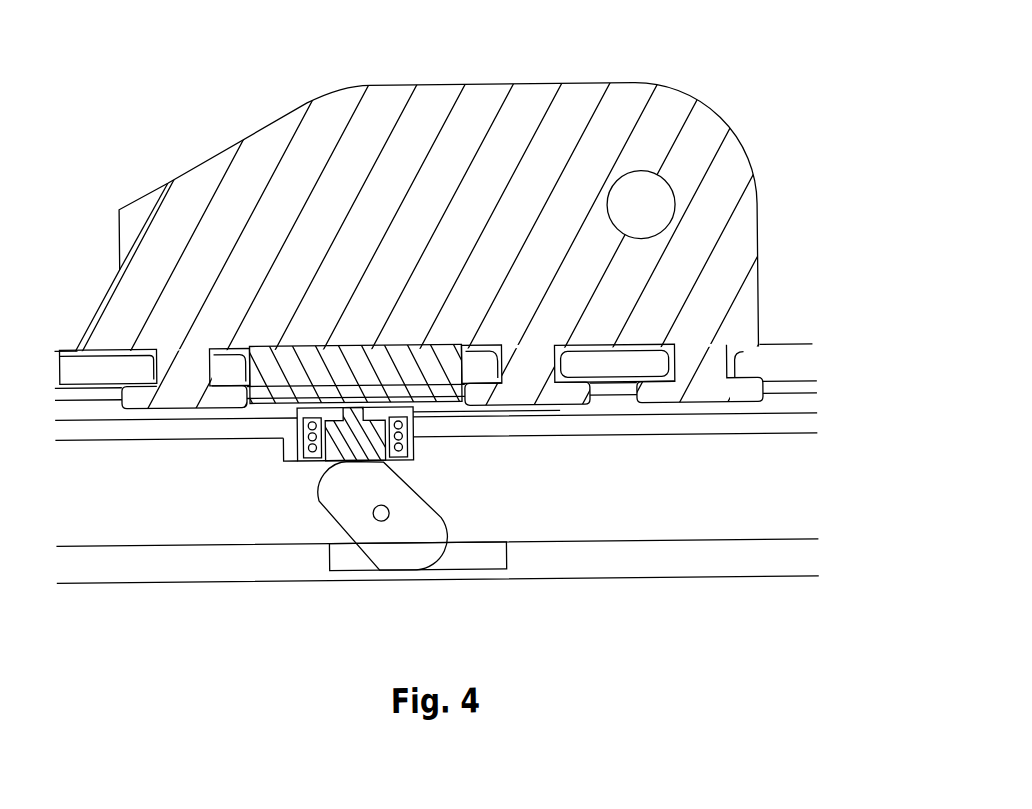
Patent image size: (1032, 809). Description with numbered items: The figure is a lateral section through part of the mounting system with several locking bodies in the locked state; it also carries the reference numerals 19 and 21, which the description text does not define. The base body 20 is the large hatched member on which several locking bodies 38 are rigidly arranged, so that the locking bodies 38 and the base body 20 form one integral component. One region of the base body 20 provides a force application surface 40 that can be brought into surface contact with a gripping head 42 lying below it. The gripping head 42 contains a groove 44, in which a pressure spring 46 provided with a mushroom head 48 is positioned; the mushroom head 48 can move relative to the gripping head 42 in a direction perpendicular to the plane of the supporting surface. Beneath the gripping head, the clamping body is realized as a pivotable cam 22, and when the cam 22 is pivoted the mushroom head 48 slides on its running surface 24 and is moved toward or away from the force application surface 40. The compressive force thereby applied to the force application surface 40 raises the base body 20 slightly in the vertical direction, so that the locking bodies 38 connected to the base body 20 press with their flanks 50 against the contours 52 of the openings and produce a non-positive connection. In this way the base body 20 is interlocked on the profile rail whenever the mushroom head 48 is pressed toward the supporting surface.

The slide assembly 19 is at (778, 96).
The base body 20 is at (740, 266).
The guide rail 21 is at (548, 512).
The cam 22 is at (410, 557).
The running surface 24 is at (345, 416).
The locking bodies 38 is at (713, 382).
The force application surface 40 is at (448, 408).
The gripping head 42 is at (283, 437).
The groove 44 is at (327, 445).
The pressure spring 46 is at (388, 462).
The mushroom head 48 is at (360, 462).
The flanks 50 is at (147, 383).
The contours 52 is at (582, 359).